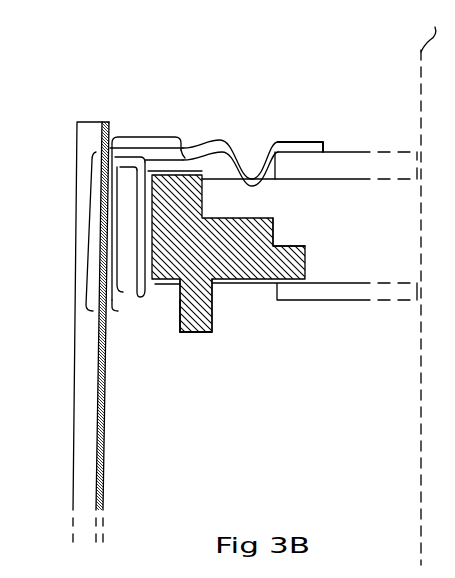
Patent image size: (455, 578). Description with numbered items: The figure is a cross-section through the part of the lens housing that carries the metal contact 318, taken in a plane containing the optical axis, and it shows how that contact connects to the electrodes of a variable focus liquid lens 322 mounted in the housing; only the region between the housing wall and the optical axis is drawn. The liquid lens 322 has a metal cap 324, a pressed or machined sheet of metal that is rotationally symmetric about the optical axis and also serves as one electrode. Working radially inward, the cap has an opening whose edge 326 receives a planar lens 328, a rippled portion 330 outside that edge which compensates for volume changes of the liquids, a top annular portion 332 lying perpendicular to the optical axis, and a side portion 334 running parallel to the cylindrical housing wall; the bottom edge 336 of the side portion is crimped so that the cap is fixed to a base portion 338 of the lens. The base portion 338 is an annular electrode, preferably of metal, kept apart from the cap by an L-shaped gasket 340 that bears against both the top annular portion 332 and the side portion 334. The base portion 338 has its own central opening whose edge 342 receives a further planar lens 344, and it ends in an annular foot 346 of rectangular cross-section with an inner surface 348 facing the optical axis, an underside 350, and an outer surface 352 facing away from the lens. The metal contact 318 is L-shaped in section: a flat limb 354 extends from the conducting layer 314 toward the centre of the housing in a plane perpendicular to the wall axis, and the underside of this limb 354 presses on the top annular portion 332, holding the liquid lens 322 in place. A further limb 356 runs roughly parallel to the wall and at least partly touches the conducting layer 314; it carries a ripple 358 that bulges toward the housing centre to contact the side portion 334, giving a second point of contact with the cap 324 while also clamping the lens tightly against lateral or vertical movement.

The conducting layer 314 is at (103, 405).
The metal contact 318 is at (100, 256).
The variable focus liquid lens 322 is at (345, 131).
The metal cap 324 is at (257, 181).
The edge 326 is at (307, 142).
The planar lens 328 is at (347, 168).
The rippled portion 330 is at (250, 130).
The top annular portion 332 is at (185, 147).
The side portion 334 is at (132, 263).
The bottom edge 336 is at (140, 300).
The base portion 338 is at (275, 235).
The L-shaped gasket 340 is at (157, 153).
The edge 342 is at (246, 281).
The further planar lens 344 is at (335, 288).
The annular foot 346 is at (177, 290).
The inner surface 348 is at (215, 308).
The underside 350 is at (200, 333).
The outer surface 352 is at (178, 320).
The limb 354 is at (143, 132).
The further limb 356 is at (78, 232).
The ripple 358 is at (107, 237).